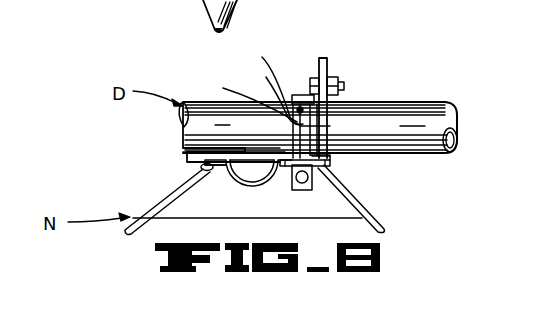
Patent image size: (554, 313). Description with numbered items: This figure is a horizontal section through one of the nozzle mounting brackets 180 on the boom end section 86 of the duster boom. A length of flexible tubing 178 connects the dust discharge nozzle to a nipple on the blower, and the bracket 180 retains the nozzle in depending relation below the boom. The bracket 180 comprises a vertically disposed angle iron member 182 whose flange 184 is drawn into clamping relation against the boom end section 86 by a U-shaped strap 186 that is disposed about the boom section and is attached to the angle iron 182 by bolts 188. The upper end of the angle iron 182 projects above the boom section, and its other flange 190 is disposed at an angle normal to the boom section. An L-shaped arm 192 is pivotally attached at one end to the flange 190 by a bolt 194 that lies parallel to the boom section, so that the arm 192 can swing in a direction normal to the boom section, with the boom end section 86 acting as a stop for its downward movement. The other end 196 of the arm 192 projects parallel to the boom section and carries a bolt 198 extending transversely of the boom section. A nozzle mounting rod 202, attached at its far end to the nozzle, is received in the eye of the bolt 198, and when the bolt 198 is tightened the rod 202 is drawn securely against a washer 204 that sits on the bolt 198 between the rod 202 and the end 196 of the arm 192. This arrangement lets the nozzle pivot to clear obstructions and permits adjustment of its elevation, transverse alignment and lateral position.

The boom end section 86 is at (420, 106).
The flexible tubing 178 is at (205, 168).
The nozzle mounting bracket 180 is at (332, 77).
The angle iron member 182 is at (315, 77).
The flange 184 is at (265, 86).
The U-shaped strap 186 is at (264, 95).
The bolts 188 is at (253, 119).
The flange 190 is at (318, 77).
The L-shaped arm 192 is at (327, 112).
The bolt 194 is at (340, 87).
The end of the arm 196 is at (330, 162).
The bolt 198 is at (297, 188).
The nozzle mounting rod 202 is at (327, 173).
The washer 204 is at (322, 166).